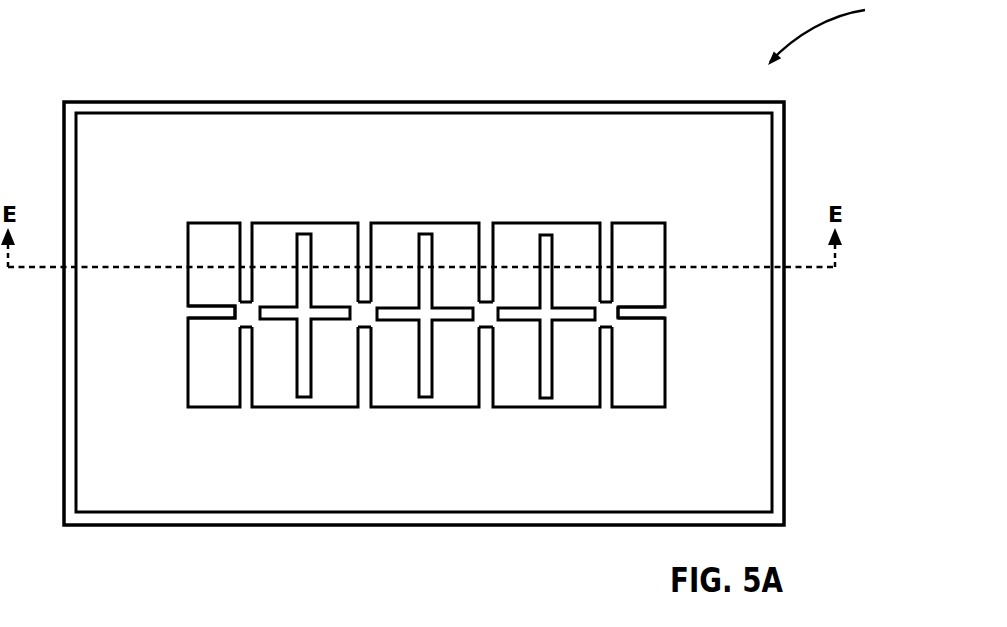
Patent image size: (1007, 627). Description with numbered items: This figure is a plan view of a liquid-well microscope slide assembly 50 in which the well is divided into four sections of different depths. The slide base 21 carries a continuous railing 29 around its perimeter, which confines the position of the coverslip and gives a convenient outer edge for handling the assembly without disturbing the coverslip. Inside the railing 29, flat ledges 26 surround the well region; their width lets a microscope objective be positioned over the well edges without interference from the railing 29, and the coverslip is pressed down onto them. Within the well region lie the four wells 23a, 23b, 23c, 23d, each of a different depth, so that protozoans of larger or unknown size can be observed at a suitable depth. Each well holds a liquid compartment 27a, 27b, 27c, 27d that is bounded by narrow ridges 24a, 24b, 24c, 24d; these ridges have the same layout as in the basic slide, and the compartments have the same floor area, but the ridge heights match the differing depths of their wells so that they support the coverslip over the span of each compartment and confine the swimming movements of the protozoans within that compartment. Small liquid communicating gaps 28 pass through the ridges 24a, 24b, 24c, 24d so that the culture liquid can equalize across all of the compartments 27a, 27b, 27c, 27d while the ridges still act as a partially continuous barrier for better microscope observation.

The slide assembly 50 is at (834, 32).
The slide base 21 is at (115, 102).
The railing 29 is at (693, 103).
The ledges 26 is at (133, 155).
The well 23a is at (203, 222).
The well 23b is at (323, 227).
The well 23c is at (445, 224).
The well 23d is at (565, 224).
The liquid compartment 27a is at (282, 245).
The liquid compartment 27b is at (400, 248).
The liquid compartment 27c is at (522, 248).
The liquid compartment 27d is at (643, 248).
The ridge 24a is at (237, 283).
The ridge 24b is at (357, 282).
The ridge 24c is at (478, 278).
The ridge 24d is at (598, 281).
The liquid communicating gaps 28 is at (261, 328).